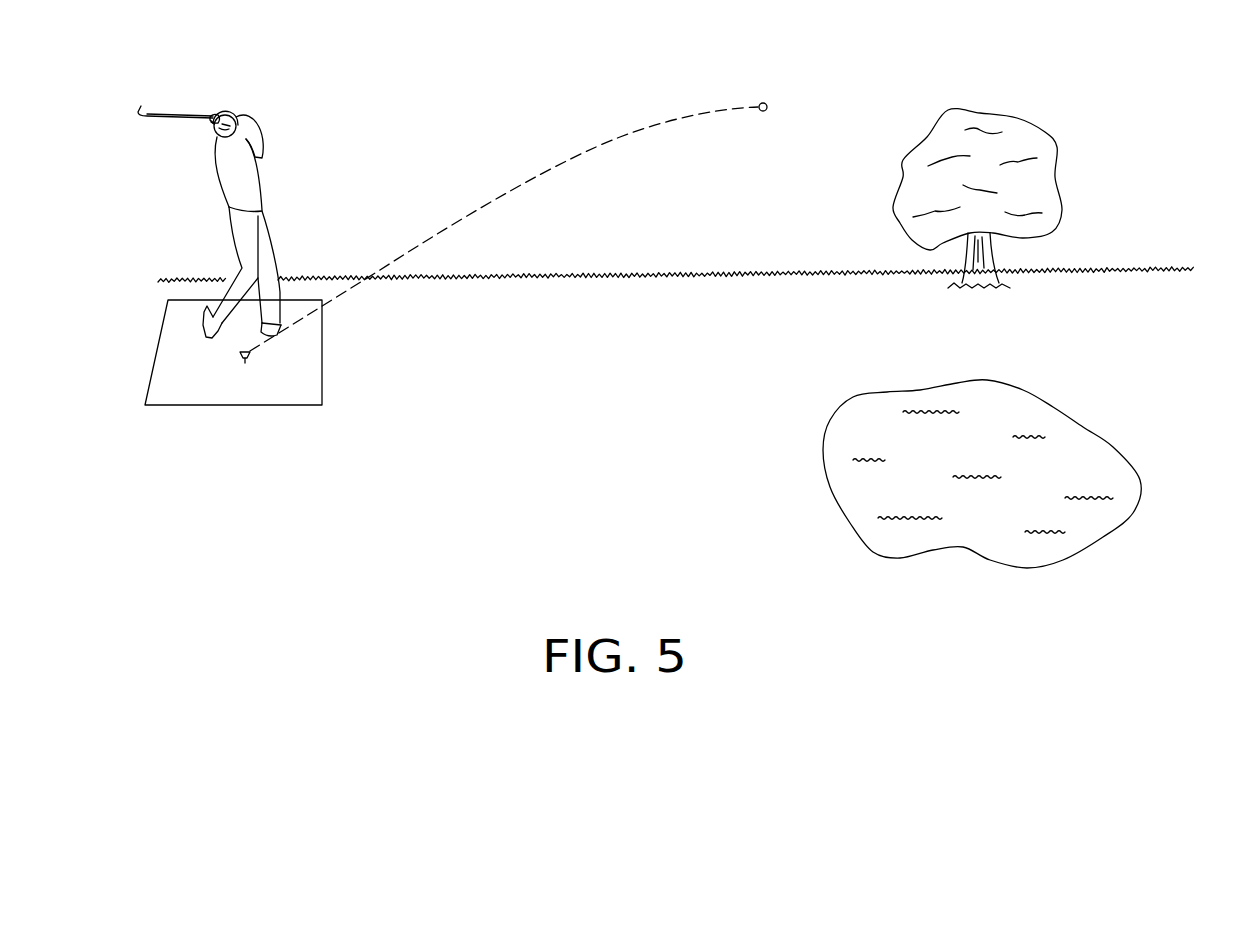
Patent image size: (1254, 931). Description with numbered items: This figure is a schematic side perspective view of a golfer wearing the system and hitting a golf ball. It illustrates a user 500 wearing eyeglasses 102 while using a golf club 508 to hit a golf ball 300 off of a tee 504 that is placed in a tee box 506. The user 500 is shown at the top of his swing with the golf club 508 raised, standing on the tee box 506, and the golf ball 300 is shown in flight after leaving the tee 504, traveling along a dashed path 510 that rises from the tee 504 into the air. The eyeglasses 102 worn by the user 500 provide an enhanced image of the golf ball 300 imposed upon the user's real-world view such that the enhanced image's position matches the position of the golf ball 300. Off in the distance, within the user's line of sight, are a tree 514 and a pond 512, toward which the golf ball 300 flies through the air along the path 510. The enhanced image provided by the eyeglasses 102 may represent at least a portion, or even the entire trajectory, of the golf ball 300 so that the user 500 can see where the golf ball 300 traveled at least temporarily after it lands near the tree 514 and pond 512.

The eyeglasses 102 is at (228, 117).
The golf ball 300 is at (765, 102).
The user 500 is at (253, 180).
The tee 504 is at (250, 355).
The tee box 506 is at (195, 375).
The golf club 508 is at (173, 122).
The path 510 is at (553, 167).
The pond 512 is at (1030, 418).
The tree 514 is at (1020, 138).